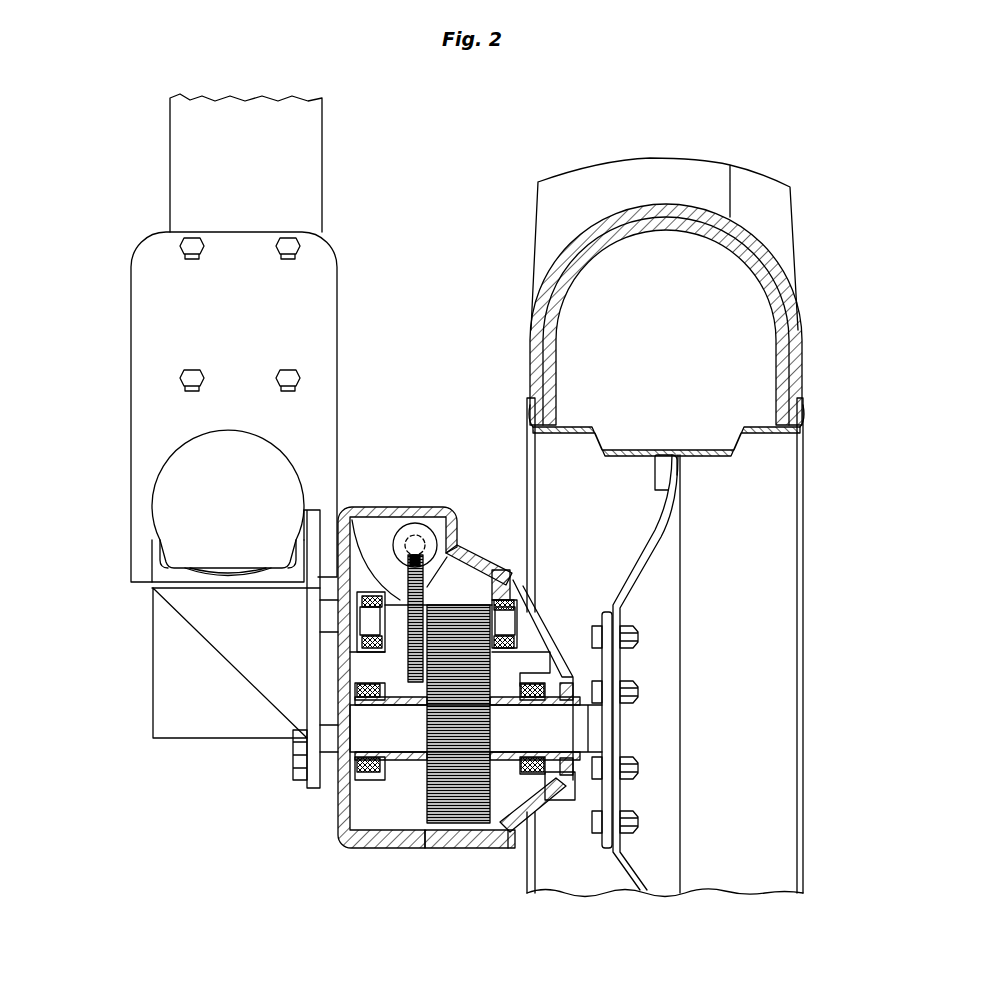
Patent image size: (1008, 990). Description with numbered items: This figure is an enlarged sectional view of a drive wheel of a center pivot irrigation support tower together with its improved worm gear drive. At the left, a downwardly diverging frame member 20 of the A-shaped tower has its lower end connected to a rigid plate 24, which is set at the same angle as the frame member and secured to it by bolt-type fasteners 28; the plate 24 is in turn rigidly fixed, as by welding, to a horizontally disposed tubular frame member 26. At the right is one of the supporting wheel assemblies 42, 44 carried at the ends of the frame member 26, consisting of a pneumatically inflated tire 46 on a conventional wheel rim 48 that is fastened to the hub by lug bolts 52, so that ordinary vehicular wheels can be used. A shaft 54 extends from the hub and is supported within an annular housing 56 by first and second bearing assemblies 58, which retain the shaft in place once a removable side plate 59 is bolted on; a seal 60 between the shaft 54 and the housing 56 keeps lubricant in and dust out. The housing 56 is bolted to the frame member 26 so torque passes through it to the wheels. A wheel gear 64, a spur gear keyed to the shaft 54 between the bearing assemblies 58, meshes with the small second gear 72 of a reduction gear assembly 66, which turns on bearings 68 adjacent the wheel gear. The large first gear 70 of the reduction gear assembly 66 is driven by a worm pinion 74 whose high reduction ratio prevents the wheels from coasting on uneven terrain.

The frame member 20 is at (181, 179).
The rigid plate 24 is at (153, 325).
The tubular frame member 26 is at (172, 513).
The bolt-type fasteners 28 is at (192, 382).
The wheel assembly 42 is at (818, 370).
The wheel assembly 44 is at (723, 314).
The pneumatically inflated tire 46 is at (785, 250).
The wheel rim 48 is at (788, 490).
The lug bolts 52 is at (640, 692).
The shaft 54 is at (572, 735).
The annular housing 56 is at (352, 840).
The bearing assemblies 58 is at (362, 782).
The removable side plate 59 is at (507, 843).
The seal 60 is at (565, 780).
The wheel gear 64 is at (432, 810).
The reduction gear assembly 66 is at (457, 543).
The bearing 68 is at (368, 600).
The first gear 70 is at (405, 600).
The second gear 72 is at (460, 820).
The worm pinion 74 is at (412, 533).